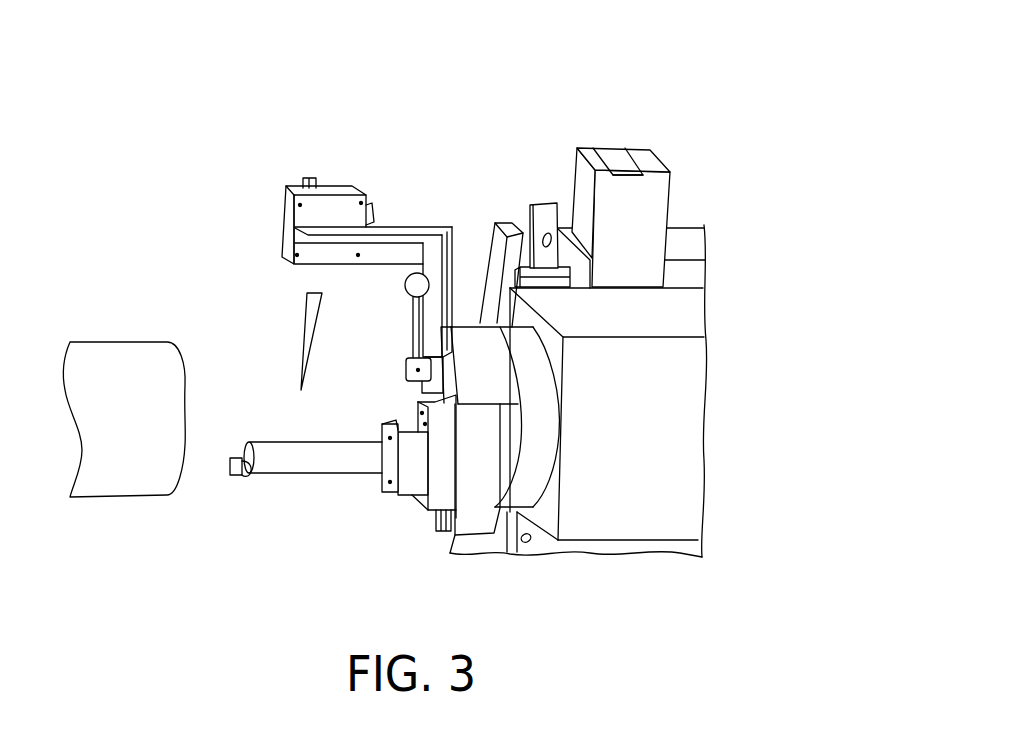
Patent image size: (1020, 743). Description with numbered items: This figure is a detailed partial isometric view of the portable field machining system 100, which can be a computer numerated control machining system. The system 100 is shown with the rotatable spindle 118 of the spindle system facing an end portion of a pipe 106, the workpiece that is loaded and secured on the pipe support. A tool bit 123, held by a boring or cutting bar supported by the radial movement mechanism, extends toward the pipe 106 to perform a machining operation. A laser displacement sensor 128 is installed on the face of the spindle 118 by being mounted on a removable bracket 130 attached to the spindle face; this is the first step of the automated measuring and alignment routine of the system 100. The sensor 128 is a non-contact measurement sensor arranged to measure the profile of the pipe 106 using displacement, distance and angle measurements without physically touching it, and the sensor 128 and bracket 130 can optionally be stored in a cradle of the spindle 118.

The system 100 is at (628, 116).
The pipe 106 is at (86, 334).
The spindle 118 is at (473, 332).
The tool bit 123 is at (224, 488).
The laser displacement sensor 128 is at (288, 179).
The bracket 130 is at (398, 222).